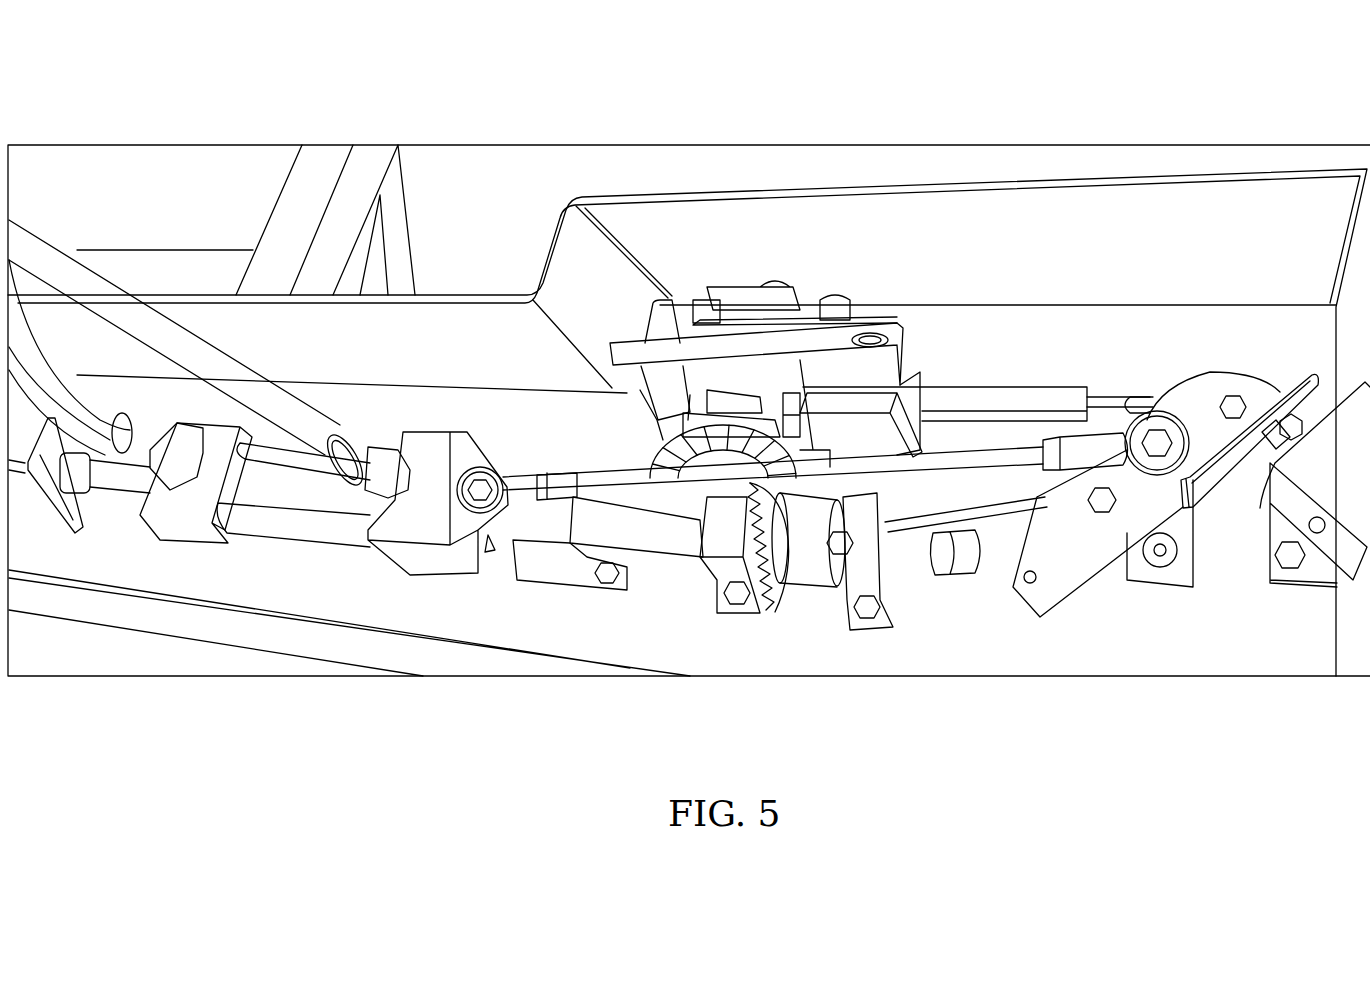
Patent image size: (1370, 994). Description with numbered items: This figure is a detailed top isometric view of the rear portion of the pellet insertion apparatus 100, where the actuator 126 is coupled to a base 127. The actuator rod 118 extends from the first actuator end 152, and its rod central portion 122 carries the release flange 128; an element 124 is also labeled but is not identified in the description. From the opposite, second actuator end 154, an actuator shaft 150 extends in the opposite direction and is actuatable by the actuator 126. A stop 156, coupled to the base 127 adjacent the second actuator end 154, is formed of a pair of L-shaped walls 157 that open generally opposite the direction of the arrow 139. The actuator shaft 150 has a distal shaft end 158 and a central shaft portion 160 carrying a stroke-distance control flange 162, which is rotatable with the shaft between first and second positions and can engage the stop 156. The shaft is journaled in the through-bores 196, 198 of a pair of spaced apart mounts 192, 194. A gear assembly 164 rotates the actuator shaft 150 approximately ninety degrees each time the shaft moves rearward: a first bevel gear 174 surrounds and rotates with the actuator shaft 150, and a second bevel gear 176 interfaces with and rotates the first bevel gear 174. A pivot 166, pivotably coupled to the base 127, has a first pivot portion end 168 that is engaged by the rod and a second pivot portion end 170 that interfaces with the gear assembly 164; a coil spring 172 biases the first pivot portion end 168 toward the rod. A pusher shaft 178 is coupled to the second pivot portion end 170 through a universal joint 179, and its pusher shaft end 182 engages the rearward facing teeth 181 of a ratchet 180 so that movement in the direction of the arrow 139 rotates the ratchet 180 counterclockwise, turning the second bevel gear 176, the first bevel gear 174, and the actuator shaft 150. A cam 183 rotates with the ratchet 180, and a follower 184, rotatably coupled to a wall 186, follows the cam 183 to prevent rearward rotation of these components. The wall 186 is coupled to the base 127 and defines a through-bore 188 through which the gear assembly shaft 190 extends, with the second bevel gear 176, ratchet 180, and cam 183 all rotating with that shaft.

The pellet insertion apparatus 100 is at (340, 56).
The actuator rod 118 is at (133, 477).
The rod central portion 122 is at (100, 477).
The hose fitting 124 is at (148, 485).
The actuator 126 is at (253, 483).
The base 127 is at (380, 660).
The release flange 128 is at (90, 483).
The arrow 139 is at (580, 768).
The actuator shaft 150 is at (650, 530).
The first actuator end 152 is at (213, 447).
The second actuator end 154 is at (420, 520).
The stop 156 is at (603, 573).
The L-shaped walls 157 is at (560, 487).
The distal shaft end 158 is at (972, 573).
The central shaft portion 160 is at (617, 517).
The stroke-distance control flange 162 is at (543, 527).
The gear assembly 164 is at (845, 252).
The pivot 166 is at (1130, 533).
The first pivot portion end 168 is at (1063, 590).
The second pivot portion end 170 is at (1237, 385).
The spring 172 is at (987, 520).
The first bevel gear 174 is at (863, 557).
The second bevel gear 176 is at (663, 420).
The pusher shaft 178 is at (1057, 395).
The universal joint 179 is at (1147, 398).
The ratchet 180 is at (760, 423).
The rearward facing teeth 181 is at (687, 417).
The pusher shaft end 182 is at (805, 405).
The cam 183 is at (748, 345).
The follower 184 is at (767, 317).
The wall 186 is at (925, 360).
The through-bore 188 is at (728, 392).
The gear assembly shaft 190 is at (712, 393).
The mount 192 is at (715, 533).
The mount 194 is at (890, 573).
The through-bore 196 is at (760, 597).
The through-bore 198 is at (892, 578).